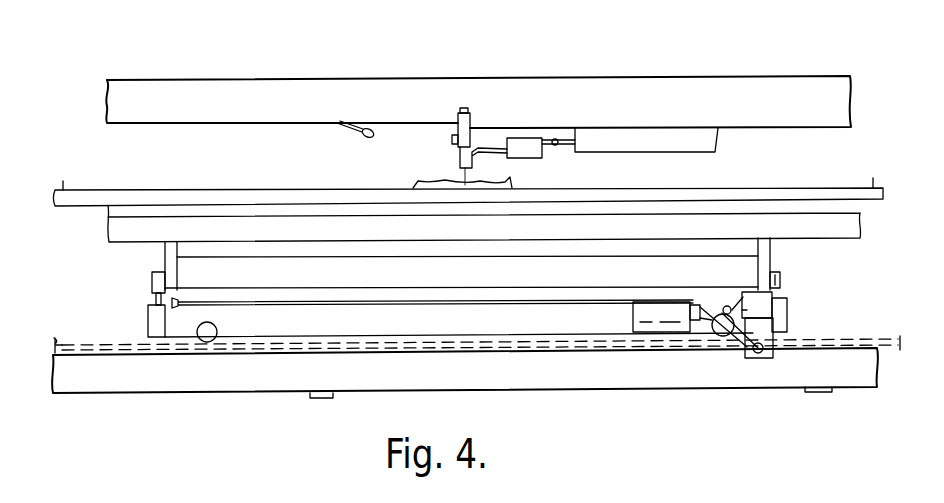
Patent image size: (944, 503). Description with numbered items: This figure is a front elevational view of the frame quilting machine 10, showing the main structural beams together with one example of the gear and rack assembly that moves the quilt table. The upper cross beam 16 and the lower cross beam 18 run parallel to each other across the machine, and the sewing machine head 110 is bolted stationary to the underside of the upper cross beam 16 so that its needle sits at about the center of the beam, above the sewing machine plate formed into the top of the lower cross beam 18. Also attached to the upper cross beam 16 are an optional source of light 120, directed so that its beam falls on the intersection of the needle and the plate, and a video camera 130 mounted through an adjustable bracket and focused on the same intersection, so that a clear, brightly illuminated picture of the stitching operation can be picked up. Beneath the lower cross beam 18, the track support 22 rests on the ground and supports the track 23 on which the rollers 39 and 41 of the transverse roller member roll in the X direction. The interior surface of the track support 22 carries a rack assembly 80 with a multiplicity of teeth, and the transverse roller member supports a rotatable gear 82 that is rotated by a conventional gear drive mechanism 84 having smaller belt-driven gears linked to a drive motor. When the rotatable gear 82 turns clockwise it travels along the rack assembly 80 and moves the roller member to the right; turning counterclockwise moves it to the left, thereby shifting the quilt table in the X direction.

The frame quilting machine 10 is at (505, 184).
The upper cross beam 16 is at (757, 90).
The lower cross beam 18 is at (735, 227).
The track support 22 is at (703, 387).
The track 23 is at (825, 336).
The roller 39 is at (198, 330).
The roller 41 is at (698, 305).
The rack assembly 80 is at (857, 325).
The rotatable gear 82 is at (783, 286).
The gear drive mechanism 84 is at (770, 333).
The sewing machine head 110 is at (517, 134).
The source of light 120 is at (360, 137).
The video camera 130 is at (464, 128).